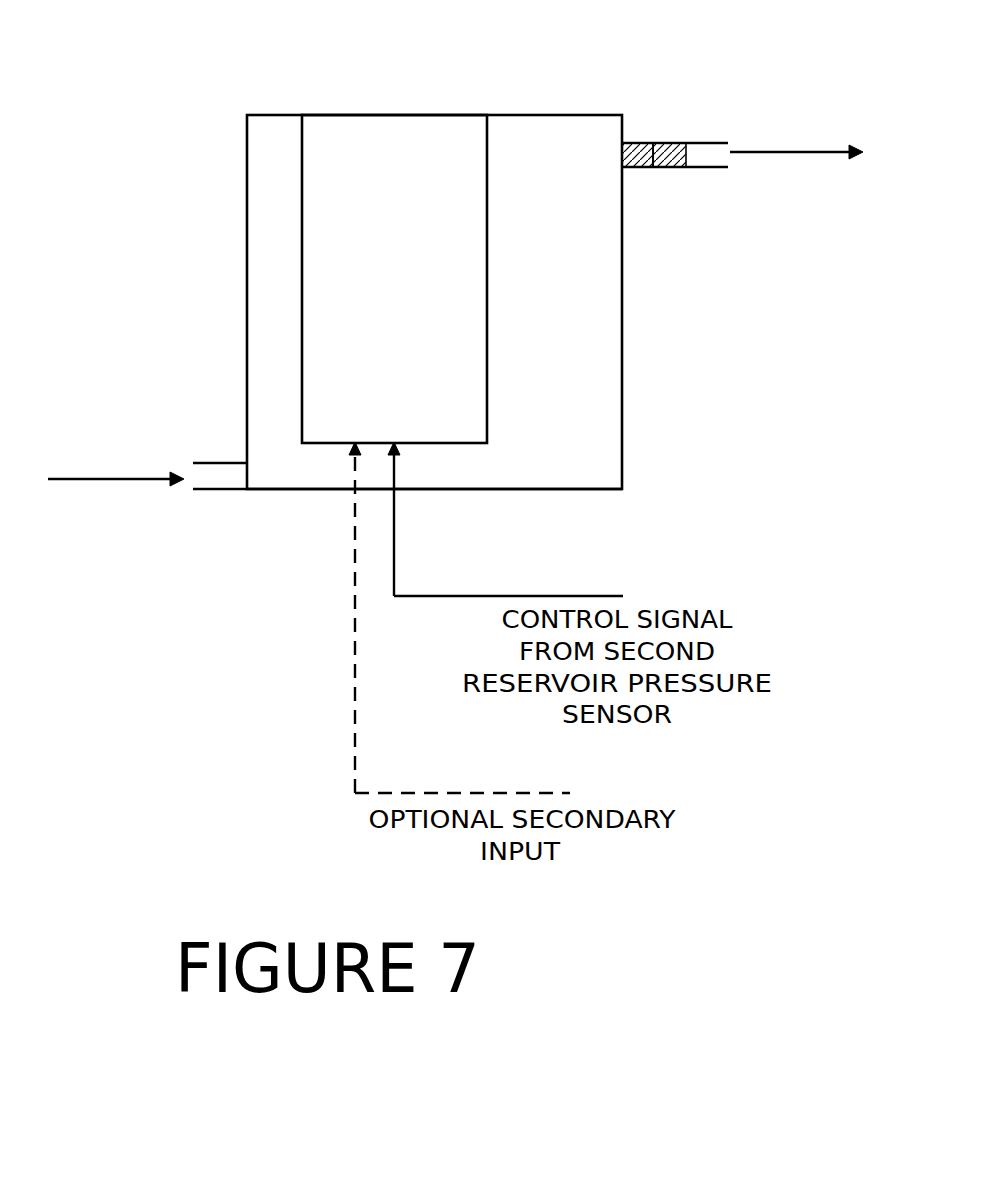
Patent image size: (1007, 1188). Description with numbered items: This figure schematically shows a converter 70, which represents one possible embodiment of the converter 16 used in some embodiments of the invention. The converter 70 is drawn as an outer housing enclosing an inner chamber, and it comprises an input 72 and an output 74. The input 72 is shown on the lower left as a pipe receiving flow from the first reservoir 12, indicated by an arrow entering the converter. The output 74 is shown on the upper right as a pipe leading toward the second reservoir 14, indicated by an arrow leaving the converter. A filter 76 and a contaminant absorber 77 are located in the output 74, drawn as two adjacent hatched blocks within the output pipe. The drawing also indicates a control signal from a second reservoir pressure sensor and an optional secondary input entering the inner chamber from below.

The converter 16 is at (193, 63).
The converter 70 is at (362, 115).
The input 72 is at (227, 489).
The output 74 is at (720, 141).
The filter 76 is at (640, 168).
The contaminant absorber 77 is at (670, 168).
The first reservoir 12 is at (130, 425).
The second reservoir 14 is at (807, 99).